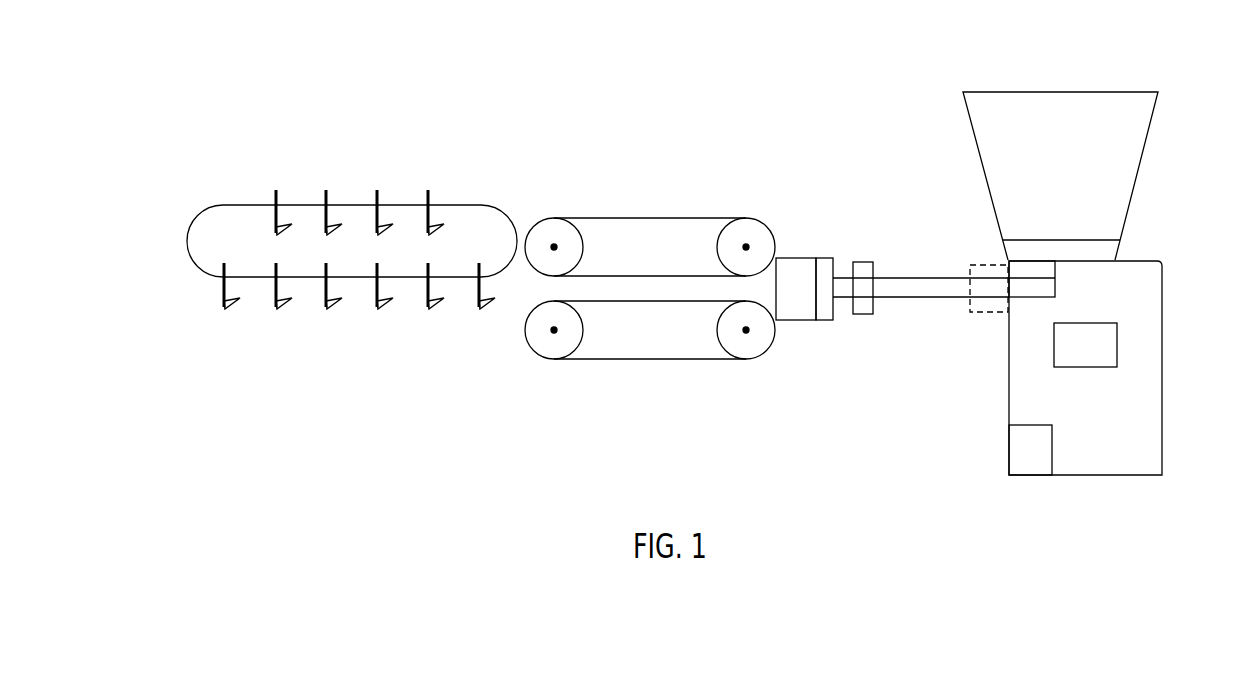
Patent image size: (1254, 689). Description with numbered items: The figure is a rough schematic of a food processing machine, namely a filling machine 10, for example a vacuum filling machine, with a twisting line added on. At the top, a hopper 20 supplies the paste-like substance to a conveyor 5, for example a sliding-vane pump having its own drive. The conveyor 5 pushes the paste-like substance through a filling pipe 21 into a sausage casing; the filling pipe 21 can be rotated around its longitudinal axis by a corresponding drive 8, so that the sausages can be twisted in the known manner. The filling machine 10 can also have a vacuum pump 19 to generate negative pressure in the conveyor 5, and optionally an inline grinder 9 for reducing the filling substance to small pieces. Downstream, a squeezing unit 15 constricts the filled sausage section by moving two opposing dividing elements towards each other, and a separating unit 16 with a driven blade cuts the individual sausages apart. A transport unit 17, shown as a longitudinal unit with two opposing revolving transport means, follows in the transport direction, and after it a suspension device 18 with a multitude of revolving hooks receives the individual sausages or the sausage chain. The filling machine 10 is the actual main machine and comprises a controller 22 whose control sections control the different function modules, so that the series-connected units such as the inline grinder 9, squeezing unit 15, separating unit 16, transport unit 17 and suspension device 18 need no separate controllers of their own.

The filling machine 10 is at (1124, 62).
The hopper 20 is at (1150, 137).
The conveyor 5 is at (1108, 248).
The inline grinder 9 is at (983, 264).
The drive 8 is at (1028, 300).
The filling pipe 21 is at (889, 300).
The squeezing unit 15 is at (828, 257).
The separating unit 16 is at (796, 257).
The transport unit 17 is at (542, 227).
The suspension device 18 is at (346, 203).
The controller 22 is at (1097, 357).
The vacuum pump 19 is at (1053, 434).